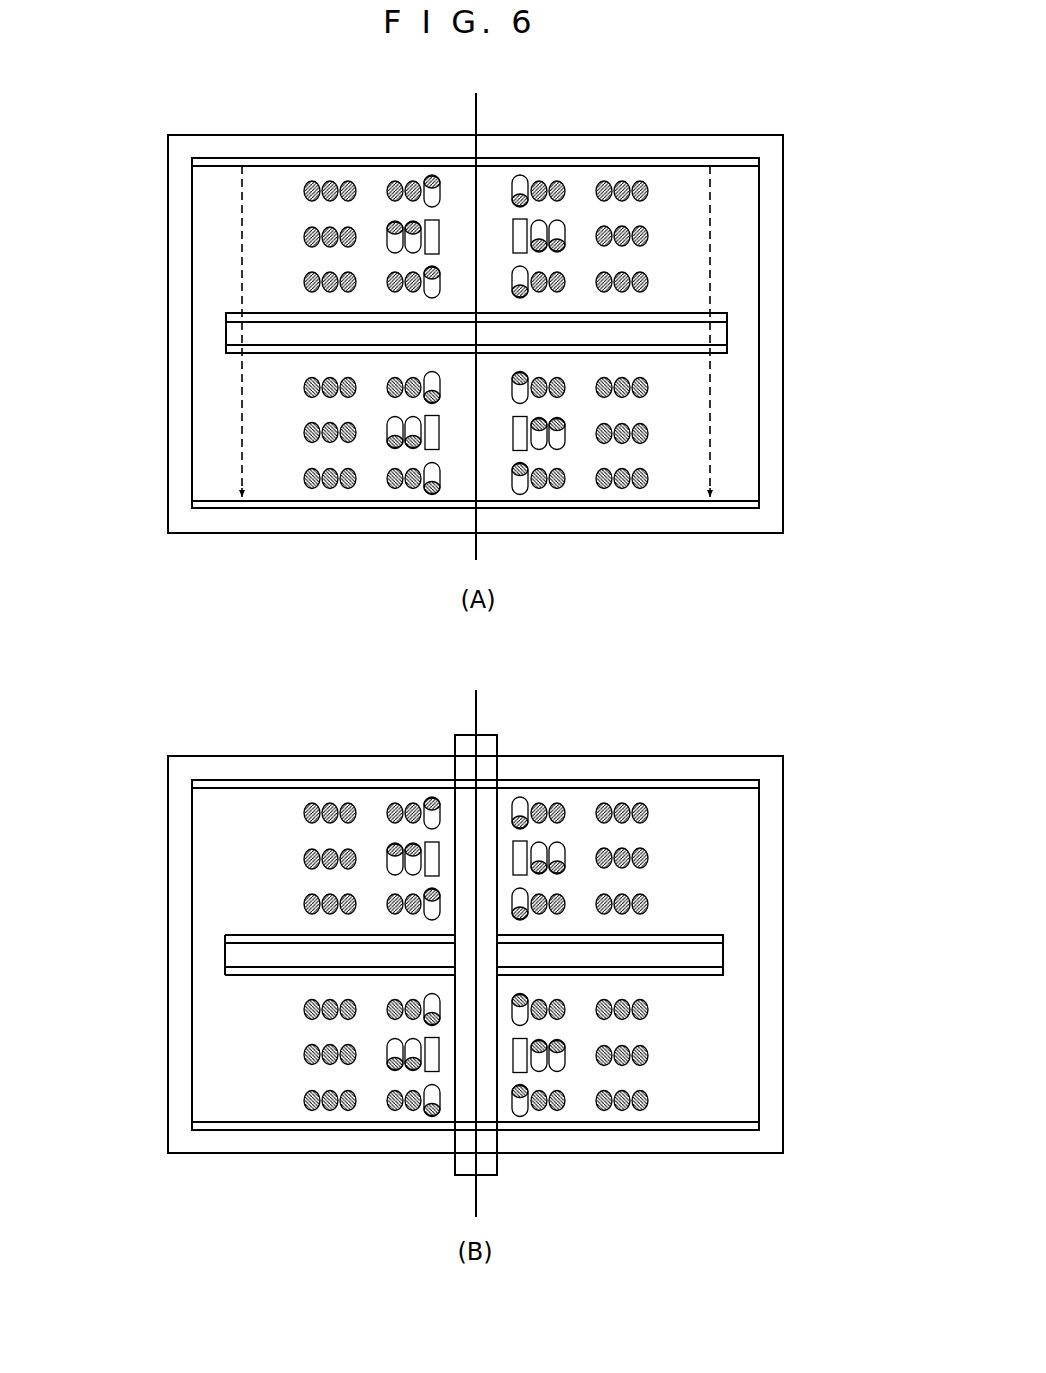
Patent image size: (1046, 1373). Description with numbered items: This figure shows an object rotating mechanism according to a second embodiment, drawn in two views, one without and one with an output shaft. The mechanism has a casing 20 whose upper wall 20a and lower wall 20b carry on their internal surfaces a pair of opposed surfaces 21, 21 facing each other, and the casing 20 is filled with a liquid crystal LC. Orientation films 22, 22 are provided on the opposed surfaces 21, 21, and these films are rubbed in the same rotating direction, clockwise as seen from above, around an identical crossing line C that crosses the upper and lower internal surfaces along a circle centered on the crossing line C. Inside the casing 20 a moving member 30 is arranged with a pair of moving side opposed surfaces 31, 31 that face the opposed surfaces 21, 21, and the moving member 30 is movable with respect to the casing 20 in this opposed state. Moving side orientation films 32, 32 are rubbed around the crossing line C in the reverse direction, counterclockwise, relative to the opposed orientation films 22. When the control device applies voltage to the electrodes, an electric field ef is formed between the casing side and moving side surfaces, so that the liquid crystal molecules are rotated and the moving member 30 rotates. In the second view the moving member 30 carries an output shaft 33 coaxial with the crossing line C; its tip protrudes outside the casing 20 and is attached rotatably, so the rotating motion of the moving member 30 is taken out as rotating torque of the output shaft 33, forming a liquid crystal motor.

The casing 20 is at (158, 148).
The upper wall 20a is at (396, 143).
The lower wall 20b is at (380, 523).
The opposed surface 21 is at (576, 160).
The orientation film 22 is at (252, 162).
The moving member 30 is at (715, 328).
The moving side opposed surface 31 is at (663, 317).
The moving side orientation film 32 is at (718, 318).
The output shaft 33 is at (467, 748).
The liquid crystal LC is at (722, 193).
The crossing line C is at (476, 118).
The electric field ef is at (476, 332).